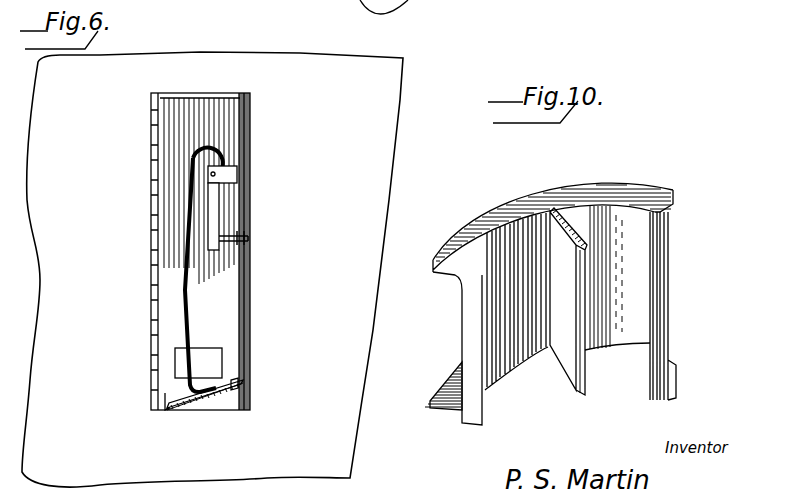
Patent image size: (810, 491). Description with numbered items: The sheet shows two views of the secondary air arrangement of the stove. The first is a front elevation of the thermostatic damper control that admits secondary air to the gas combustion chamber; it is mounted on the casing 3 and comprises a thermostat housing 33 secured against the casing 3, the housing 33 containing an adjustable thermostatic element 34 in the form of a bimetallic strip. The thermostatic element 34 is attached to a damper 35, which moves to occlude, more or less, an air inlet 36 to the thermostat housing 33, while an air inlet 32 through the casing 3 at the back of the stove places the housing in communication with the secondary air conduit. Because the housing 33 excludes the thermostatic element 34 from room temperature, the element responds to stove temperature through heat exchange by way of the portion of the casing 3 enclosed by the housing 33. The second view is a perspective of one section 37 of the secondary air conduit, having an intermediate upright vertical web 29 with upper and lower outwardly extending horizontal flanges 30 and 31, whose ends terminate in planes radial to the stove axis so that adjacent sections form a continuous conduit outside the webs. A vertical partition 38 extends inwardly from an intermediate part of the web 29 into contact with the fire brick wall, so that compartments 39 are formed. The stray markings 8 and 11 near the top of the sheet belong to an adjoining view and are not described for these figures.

In FIG. 6, the casing 3 is at (388, 98).
In FIG. 6, the section line 8 is at (207, 22).
In FIG. 6, the element 11 is at (388, 20).
In FIG. 10, the web 29 is at (606, 226).
In FIG. 10, the upper flange 30 is at (477, 217).
In FIG. 10, the lower flange 31 is at (447, 405).
In FIG. 6, the air inlet 32 is at (213, 352).
In FIG. 6, the thermostat housing 33 is at (243, 138).
In FIG. 6, the thermostatic element 34 is at (186, 290).
In FIG. 6, the damper 35 is at (205, 385).
In FIG. 6, the air inlet 36 is at (212, 405).
In FIG. 10, the section 37 is at (675, 234).
In FIG. 10, the vertical partition 38 is at (570, 348).
In FIG. 10, the compartments 39 is at (623, 310).